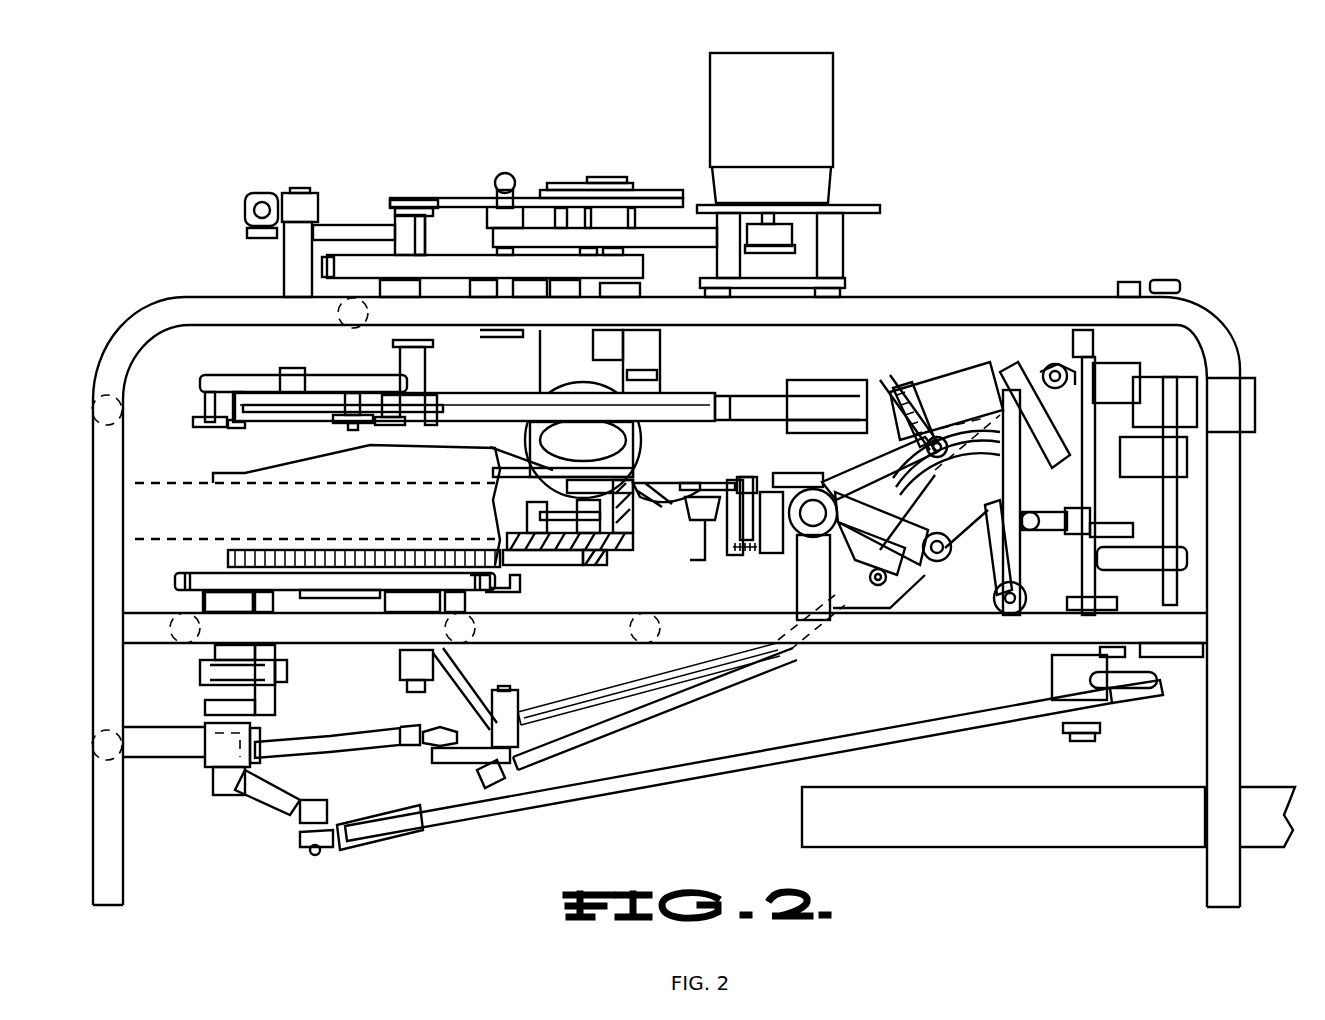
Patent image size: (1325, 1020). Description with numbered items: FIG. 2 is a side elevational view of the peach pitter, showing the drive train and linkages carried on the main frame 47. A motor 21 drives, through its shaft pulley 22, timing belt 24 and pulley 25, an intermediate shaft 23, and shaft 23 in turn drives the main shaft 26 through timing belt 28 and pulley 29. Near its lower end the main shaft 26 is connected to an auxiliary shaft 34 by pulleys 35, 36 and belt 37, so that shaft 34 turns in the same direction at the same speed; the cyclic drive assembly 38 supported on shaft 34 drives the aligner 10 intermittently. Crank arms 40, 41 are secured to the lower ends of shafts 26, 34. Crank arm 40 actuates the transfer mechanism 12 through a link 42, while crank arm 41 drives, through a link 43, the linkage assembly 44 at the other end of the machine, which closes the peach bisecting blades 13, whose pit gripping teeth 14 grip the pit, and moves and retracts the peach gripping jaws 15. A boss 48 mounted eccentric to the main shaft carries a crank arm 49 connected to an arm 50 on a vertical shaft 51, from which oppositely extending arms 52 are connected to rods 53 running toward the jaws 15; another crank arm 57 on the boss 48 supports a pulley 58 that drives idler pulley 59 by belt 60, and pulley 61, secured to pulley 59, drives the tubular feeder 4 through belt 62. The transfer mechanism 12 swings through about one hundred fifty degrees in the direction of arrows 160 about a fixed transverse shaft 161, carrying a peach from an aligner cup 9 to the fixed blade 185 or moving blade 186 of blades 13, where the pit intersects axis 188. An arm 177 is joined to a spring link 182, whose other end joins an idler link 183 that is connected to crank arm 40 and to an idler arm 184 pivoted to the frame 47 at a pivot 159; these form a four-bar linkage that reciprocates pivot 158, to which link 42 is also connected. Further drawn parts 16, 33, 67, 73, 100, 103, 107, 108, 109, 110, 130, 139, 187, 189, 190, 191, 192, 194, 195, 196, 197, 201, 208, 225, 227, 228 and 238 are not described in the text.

The tubular feeder 4 is at (588, 386).
The aligner cup 9 is at (672, 470).
The aligner 10 is at (150, 458).
The transfer mechanism 12 is at (756, 470).
The peach bisecting blades 13 is at (886, 405).
The pit gripping teeth 14 is at (943, 438).
The peach gripping jaws 15 is at (915, 390).
The base 16 is at (1260, 795).
The motor 21 is at (784, 130).
The shaft pulley 22 is at (795, 250).
The intermediate shaft 23 is at (655, 247).
The timing belt 24 is at (757, 236).
The pulley 25 is at (708, 228).
The main shaft 26 is at (428, 362).
The timing belt 28 is at (478, 280).
The pulley 29 is at (326, 280).
The stem 33 is at (355, 424).
The auxiliary shaft 34 is at (222, 612).
The pulley 35 is at (497, 585).
The pulley 36 is at (178, 575).
The belt 37 is at (340, 606).
The cyclic drive assembly 38 is at (292, 677).
The crank arm 40 is at (465, 685).
The crank arm 41 is at (268, 805).
The link 42 is at (595, 690).
The link 43 is at (618, 800).
The linkage assembly 44 is at (1250, 512).
The main frame 47 is at (177, 305).
The boss 48 is at (415, 240).
The crank arm 49 is at (350, 225).
The arm 50 is at (268, 195).
The vertical shaft 51 is at (305, 192).
The arms 52 is at (243, 375).
The rods 53 is at (262, 412).
The crank arm 57 is at (425, 225).
The pulley 58 is at (398, 200).
The idler pulley 59 is at (675, 198).
The belt 60 is at (512, 200).
The pulley 61 is at (628, 184).
The belt 62 is at (570, 190).
The drum 67 is at (610, 455).
The belt 73 is at (530, 458).
The hub 100 is at (497, 540).
The gear 103 is at (330, 550).
The column 107 is at (275, 700).
The block 108 is at (205, 600).
The pin 109 is at (287, 668).
The block 110 is at (200, 670).
The fork 130 is at (1068, 512).
The body 139 is at (143, 535).
The pivot 158 is at (493, 805).
The pivot 159 is at (197, 772).
The arrows 160 is at (718, 435).
The fixed shaft 161 is at (808, 535).
The arm 177 is at (872, 520).
The spring link 182 is at (670, 688).
The idler link 183 is at (450, 763).
The idler arm 184 is at (338, 752).
The fixed blade 185 is at (860, 460).
The moving blade 186 is at (970, 372).
The arc guide 187 is at (973, 528).
The axis 188 is at (960, 462).
The block 189 is at (830, 480).
The member 190 is at (895, 430).
The member 191 is at (860, 430).
The pivot 192 is at (905, 485).
The cylinder 194 is at (1010, 370).
The column 195 is at (1020, 552).
The roller 196 is at (1005, 612).
The tube 197 is at (922, 330).
The strut 201 is at (995, 560).
The rod 208 is at (1180, 545).
The bracket 225 is at (1052, 680).
The motion arrow 227 is at (683, 800).
The column 228 is at (1112, 367).
The box 238 is at (758, 393).